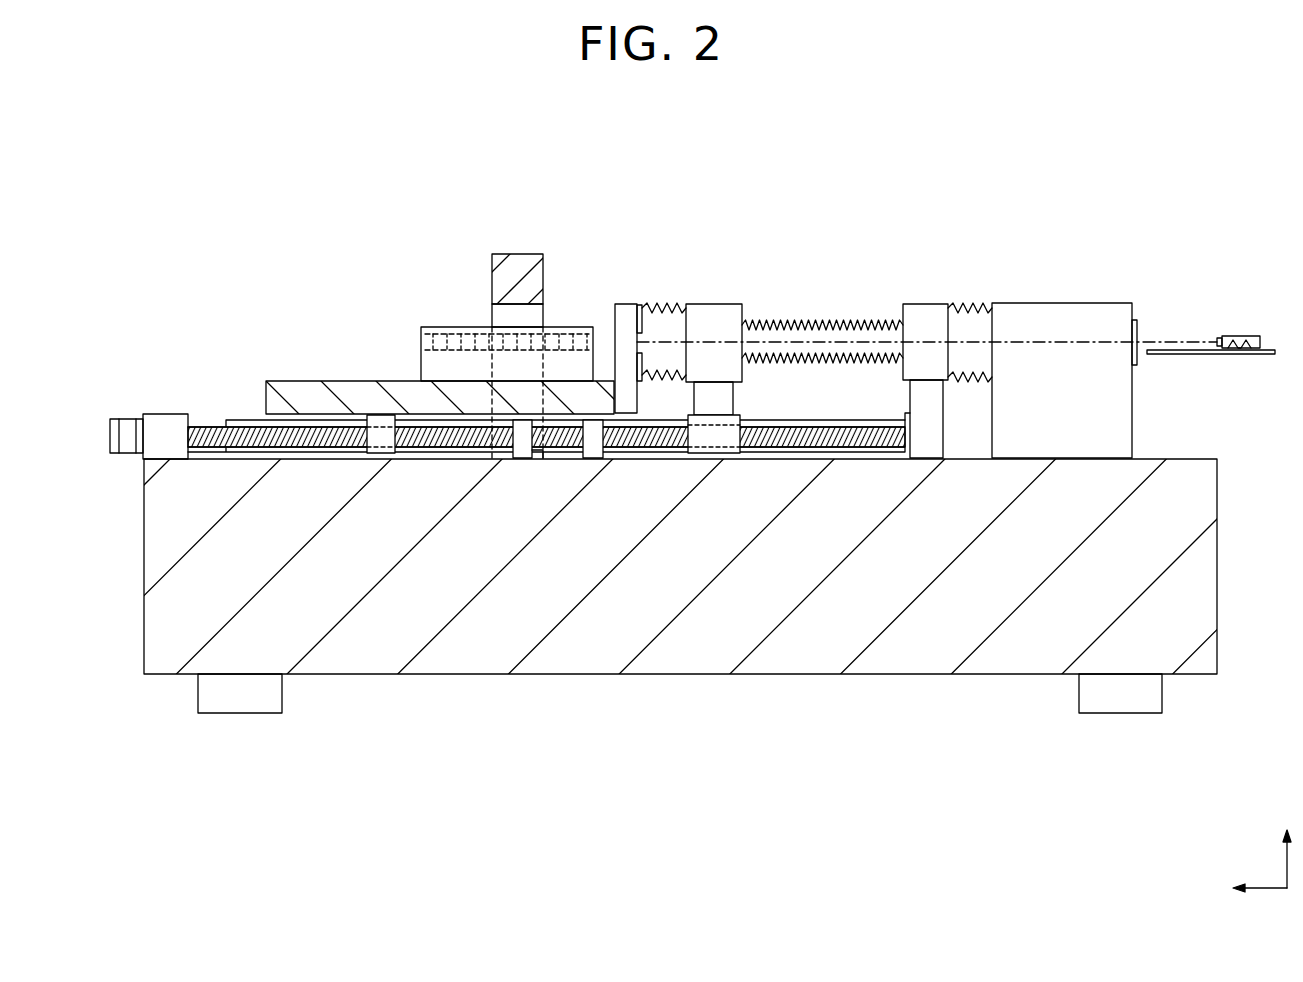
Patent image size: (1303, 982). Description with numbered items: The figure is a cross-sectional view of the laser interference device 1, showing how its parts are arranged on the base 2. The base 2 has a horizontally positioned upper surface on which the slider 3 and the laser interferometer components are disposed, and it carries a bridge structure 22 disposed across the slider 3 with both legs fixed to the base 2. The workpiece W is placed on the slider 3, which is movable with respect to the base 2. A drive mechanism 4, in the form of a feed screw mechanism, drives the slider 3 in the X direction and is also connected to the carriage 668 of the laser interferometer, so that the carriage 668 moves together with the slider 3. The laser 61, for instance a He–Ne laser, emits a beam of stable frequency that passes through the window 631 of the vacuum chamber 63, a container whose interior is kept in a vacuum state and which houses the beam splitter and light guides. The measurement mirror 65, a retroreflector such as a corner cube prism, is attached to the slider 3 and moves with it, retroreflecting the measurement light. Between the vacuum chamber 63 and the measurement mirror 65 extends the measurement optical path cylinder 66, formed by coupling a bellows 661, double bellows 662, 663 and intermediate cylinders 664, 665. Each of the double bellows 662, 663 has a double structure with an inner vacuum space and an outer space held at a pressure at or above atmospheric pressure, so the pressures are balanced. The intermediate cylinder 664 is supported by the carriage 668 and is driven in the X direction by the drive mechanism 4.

The laser interference device 1 is at (166, 178).
The base 2 is at (1218, 550).
The slider 3 is at (299, 381).
The drive mechanism 4 is at (150, 408).
The workpiece W is at (446, 328).
The bridge structure 22 is at (519, 262).
The laser 61 is at (1248, 336).
The vacuum chamber 63 is at (1062, 303).
The window 631 is at (1136, 320).
The measurement mirror 65 is at (623, 304).
The measurement optical path cylinder 66 is at (843, 266).
The bellows 661 is at (793, 322).
The double bellows 662 is at (667, 308).
The double bellows 663 is at (970, 308).
The intermediate cylinder 664 is at (717, 304).
The intermediate cylinder 665 is at (927, 304).
The carriage 668 is at (724, 397).